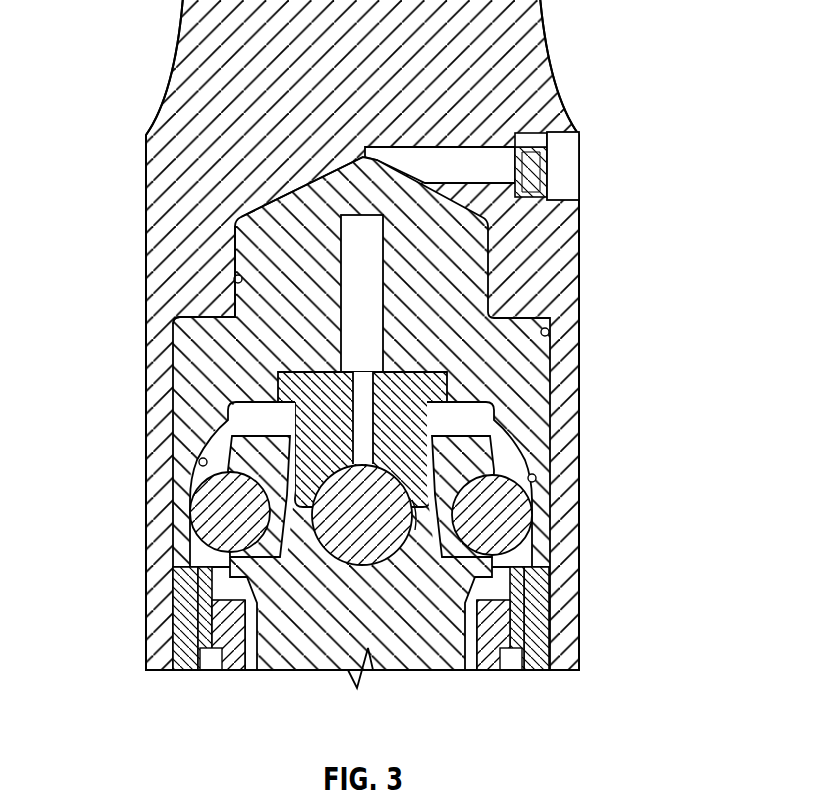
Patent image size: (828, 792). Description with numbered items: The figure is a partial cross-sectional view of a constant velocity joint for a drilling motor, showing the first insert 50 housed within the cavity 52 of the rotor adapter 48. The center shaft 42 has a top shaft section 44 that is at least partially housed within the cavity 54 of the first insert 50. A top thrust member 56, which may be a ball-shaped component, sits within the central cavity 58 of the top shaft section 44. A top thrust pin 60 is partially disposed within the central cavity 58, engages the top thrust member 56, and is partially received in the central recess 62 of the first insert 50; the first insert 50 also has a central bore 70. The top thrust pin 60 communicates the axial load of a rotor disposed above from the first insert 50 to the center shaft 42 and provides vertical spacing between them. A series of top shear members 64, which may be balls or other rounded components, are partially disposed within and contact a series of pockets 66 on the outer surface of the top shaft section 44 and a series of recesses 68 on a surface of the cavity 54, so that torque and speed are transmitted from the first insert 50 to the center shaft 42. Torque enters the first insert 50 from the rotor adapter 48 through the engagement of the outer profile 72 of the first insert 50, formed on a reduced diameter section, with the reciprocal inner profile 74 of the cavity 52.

The center shaft 42 is at (432, 657).
The top shaft section 44 is at (310, 657).
The rotor adapter 48 is at (525, 35).
The first insert 50 is at (537, 415).
The cavity 52 is at (553, 335).
The cavity 54 is at (232, 404).
The top thrust member 56 is at (340, 550).
The central cavity 58 is at (417, 518).
The top thrust pin 60 is at (398, 372).
The central recess 62 is at (447, 395).
The top shear members 64 is at (222, 505).
The pockets 66 is at (226, 540).
The recesses 68 is at (200, 460).
The central bore 70 is at (348, 235).
The outer profile 72 is at (238, 228).
The inner profile 74 is at (235, 279).